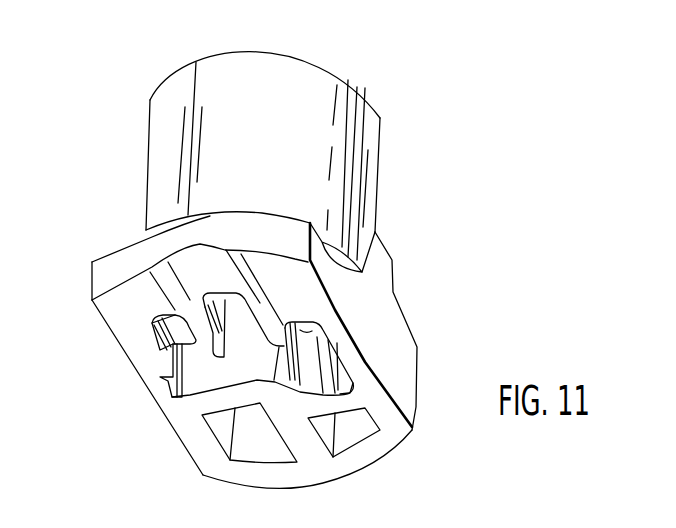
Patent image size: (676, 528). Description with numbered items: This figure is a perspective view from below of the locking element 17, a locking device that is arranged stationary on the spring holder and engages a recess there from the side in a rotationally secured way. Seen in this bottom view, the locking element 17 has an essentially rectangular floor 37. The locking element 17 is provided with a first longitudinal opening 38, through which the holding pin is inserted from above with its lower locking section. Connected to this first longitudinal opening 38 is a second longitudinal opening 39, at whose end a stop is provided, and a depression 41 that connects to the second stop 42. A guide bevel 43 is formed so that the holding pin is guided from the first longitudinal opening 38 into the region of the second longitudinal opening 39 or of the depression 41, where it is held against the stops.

The locking element 17 is at (148, 98).
The floor 37 is at (115, 330).
The first longitudinal opening 38 is at (305, 331).
The second longitudinal opening 39 is at (243, 333).
The depression 41 is at (168, 350).
The second stop 42 is at (152, 323).
The guide bevel 43 is at (310, 372).